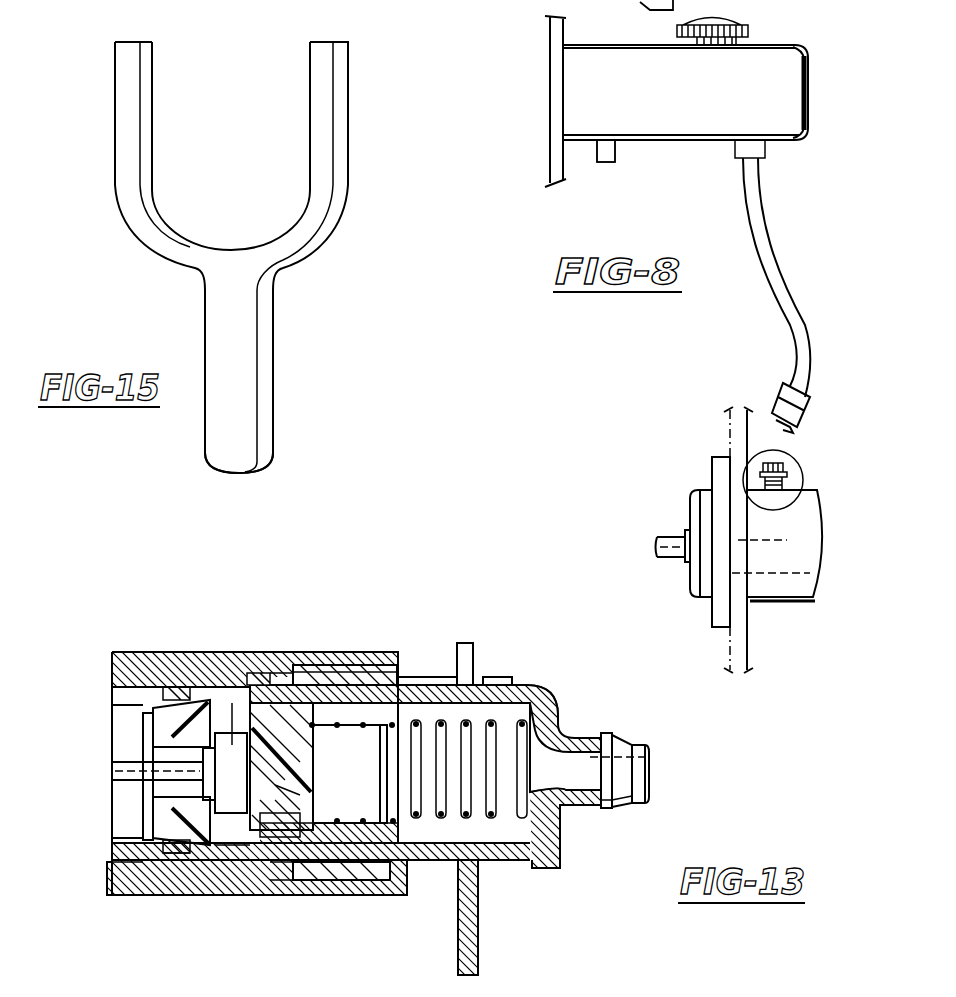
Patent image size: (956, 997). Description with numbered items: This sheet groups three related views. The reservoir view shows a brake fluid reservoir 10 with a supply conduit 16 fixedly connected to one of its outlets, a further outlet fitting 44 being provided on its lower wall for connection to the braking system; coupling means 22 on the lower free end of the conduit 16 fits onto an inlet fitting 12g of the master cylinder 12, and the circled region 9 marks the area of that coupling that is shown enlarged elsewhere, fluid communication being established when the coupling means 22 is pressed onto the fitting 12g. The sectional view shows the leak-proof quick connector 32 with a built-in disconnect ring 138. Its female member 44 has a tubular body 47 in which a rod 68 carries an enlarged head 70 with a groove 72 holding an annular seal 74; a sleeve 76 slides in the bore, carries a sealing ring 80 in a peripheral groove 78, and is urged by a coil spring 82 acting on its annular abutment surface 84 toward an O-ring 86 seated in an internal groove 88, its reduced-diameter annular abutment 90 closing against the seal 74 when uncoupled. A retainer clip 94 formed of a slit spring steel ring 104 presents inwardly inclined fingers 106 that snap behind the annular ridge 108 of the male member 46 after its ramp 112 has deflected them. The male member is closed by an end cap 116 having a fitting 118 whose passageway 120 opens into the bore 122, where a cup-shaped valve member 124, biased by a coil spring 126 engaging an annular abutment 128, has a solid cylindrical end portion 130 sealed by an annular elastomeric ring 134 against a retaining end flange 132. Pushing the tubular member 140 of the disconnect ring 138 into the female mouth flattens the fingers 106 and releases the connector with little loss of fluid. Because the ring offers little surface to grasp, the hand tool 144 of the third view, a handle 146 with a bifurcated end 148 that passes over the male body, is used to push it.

In FIG. 15, the hand tool 144 is at (157, 264).
In FIG. 13, the hand tool 144 is at (494, 659).
In FIG. 15, the handle 146 is at (246, 372).
In FIG. 13, the handle 146 is at (478, 930).
In FIG. 15, the bifurcated end 148 is at (320, 42).
In FIG. 13, the bifurcated end 148 is at (481, 660).
In FIG. 8, the reservoir 10 is at (680, 91).
In FIG. 8, the female half connector 44 is at (615, 150).
In FIG. 13, the female half connector 44 is at (120, 646).
In FIG. 8, the supply conduit 16 is at (766, 257).
In FIG. 8, the coupling means 22 is at (780, 392).
In FIG. 8, the master cylinder 12 is at (777, 610).
In FIG. 8, the inlet fitting 12g is at (783, 468).
In FIG. 8, the detail circle 9 is at (803, 478).
In FIG. 13, the connector 32 is at (232, 646).
In FIG. 13, the male half connector 46 is at (509, 670).
In FIG. 13, the tubular body 47 is at (272, 680).
In FIG. 13, the rod 68 is at (125, 770).
In FIG. 13, the enlarged head 70 is at (232, 705).
In FIG. 13, the groove 72 is at (135, 750).
In FIG. 13, the annular seal 74 is at (130, 812).
In FIG. 13, the sleeve 76 is at (118, 850).
In FIG. 13, the peripheral groove 78 is at (117, 872).
In FIG. 13, the sealing ring 80 is at (136, 885).
In FIG. 13, the coil spring 82 is at (120, 715).
In FIG. 13, the annular abutment surface 84 is at (125, 738).
In FIG. 13, the O-ring 86 is at (232, 872).
In FIG. 13, the internal groove 88 is at (254, 673).
In FIG. 13, the annular abutment 90 is at (220, 865).
In FIG. 13, the retainer clip 94 is at (366, 886).
In FIG. 13, the spring steel ring 104 is at (330, 676).
In FIG. 13, the fingers 106 is at (350, 690).
In FIG. 13, the annular ridge 108 is at (345, 665).
In FIG. 13, the ramp 112 is at (300, 690).
In FIG. 13, the end cap 116 is at (559, 712).
In FIG. 13, the fitting 118 is at (638, 740).
In FIG. 13, the passageway 120 is at (568, 777).
In FIG. 13, the bore 122 is at (533, 858).
In FIG. 13, the valve member 124 is at (283, 870).
In FIG. 13, the coil spring 126 is at (560, 795).
In FIG. 13, the annular abutment 128 is at (418, 772).
In FIG. 13, the solid cylindrical end portion 130 is at (276, 790).
In FIG. 13, the retaining end flange 132 is at (182, 868).
In FIG. 13, the annular elastomeric ring 134 is at (302, 775).
In FIG. 13, the disconnect ring 138 is at (431, 671).
In FIG. 13, the tubular member 140 is at (425, 862).